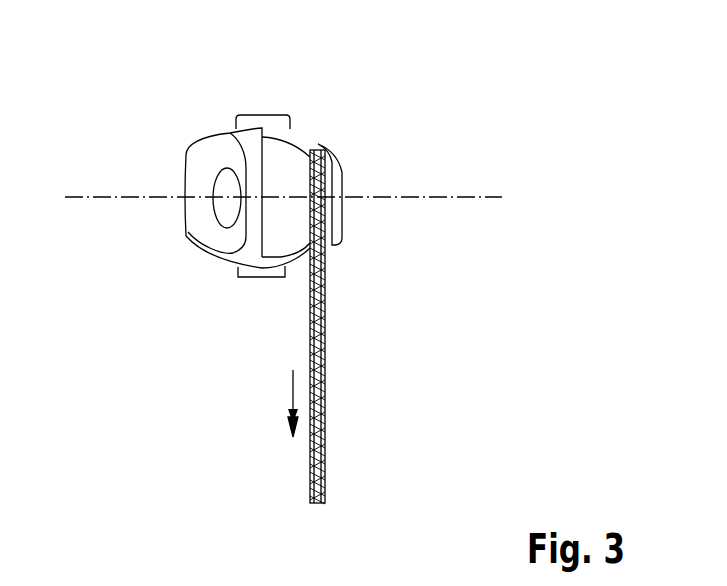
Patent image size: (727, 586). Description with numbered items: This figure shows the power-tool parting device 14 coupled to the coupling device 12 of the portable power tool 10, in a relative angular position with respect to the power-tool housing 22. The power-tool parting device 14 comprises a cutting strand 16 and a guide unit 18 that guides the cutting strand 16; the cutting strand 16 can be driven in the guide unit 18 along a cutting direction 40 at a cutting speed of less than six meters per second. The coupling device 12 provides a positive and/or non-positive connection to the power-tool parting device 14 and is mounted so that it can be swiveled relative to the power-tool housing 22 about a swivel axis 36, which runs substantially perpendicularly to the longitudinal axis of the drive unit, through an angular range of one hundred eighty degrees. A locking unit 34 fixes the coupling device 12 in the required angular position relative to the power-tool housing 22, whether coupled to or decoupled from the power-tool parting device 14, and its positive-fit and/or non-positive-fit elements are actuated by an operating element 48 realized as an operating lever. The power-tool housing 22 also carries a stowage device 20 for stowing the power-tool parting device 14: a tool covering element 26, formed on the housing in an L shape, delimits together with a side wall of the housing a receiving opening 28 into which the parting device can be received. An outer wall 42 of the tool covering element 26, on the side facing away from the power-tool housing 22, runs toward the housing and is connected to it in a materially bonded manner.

The portable power tool 10 is at (297, 263).
The coupling device 12 is at (189, 215).
The power-tool parting device 14 is at (373, 336).
The cutting strand 16 is at (325, 398).
The guide unit 18 is at (325, 349).
The stowage device 20 is at (379, 188).
The power-tool housing 22 is at (234, 137).
The tool covering element 26 is at (344, 186).
The receiving opening 28 is at (318, 144).
The locking unit 34 is at (256, 305).
The swivel axis 36 is at (491, 197).
The cutting direction 40 is at (290, 393).
The outer wall 42 is at (344, 207).
The operating element 48 is at (240, 280).